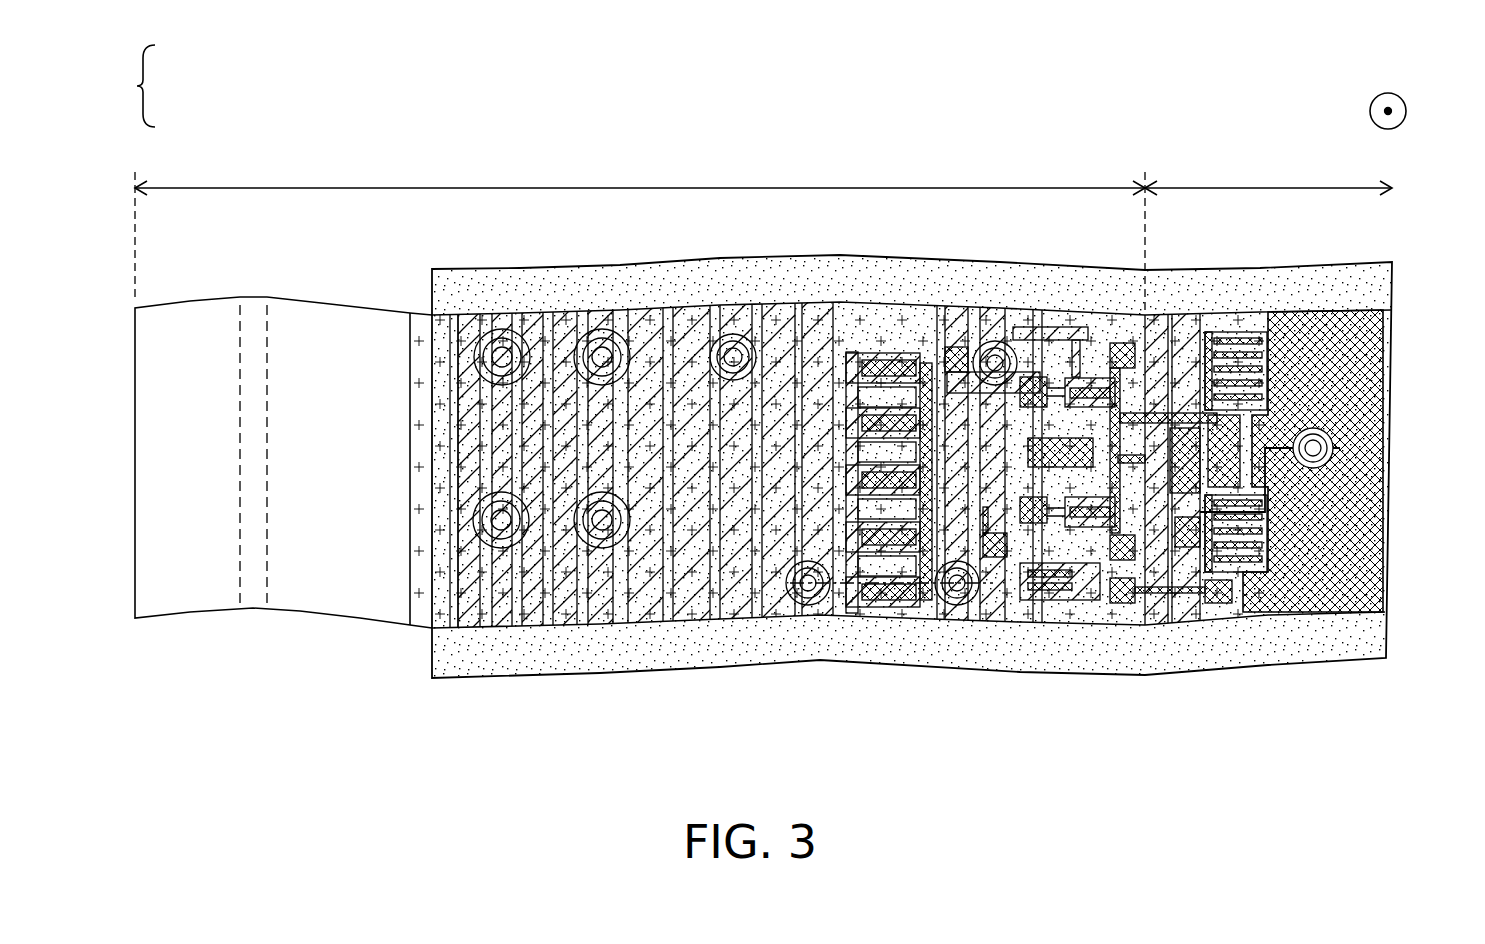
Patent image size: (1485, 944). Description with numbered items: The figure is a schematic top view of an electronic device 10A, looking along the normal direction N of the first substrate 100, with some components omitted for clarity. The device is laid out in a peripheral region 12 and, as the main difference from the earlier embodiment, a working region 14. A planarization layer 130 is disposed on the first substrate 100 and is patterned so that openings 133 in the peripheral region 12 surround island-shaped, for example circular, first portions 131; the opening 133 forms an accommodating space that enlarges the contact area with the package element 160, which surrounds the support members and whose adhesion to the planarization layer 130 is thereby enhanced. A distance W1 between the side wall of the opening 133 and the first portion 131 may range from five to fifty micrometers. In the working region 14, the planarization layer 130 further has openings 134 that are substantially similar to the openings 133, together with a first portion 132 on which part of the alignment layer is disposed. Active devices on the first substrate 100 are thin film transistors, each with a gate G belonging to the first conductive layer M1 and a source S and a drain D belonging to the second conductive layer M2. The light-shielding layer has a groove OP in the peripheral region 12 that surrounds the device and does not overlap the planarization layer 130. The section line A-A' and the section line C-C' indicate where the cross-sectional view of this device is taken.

The first substrate 100 is at (152, 580).
The peripheral region 12 is at (640, 226).
The working region 14 is at (1268, 233).
The groove OP is at (253, 312).
The package element 160 is at (408, 363).
The planarization layer 130 is at (540, 272).
The first portion 131 is at (822, 606).
The opening 133 is at (800, 594).
The first conductive layer M1 is at (688, 612).
The second conductive layer M2 is at (138, 86).
The source S is at (857, 608).
The drain D is at (920, 608).
The gate G is at (885, 613).
The distance W1 is at (940, 604).
The first portion 132 is at (1322, 466).
The opening 134 is at (1310, 468).
The electronic device 10A is at (1371, 773).
The section line A-A' A is at (890, 589).
The section line C-C' C is at (1268, 492).
The normal direction N is at (1404, 111).